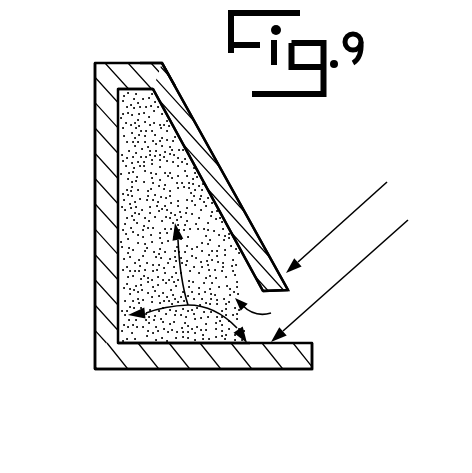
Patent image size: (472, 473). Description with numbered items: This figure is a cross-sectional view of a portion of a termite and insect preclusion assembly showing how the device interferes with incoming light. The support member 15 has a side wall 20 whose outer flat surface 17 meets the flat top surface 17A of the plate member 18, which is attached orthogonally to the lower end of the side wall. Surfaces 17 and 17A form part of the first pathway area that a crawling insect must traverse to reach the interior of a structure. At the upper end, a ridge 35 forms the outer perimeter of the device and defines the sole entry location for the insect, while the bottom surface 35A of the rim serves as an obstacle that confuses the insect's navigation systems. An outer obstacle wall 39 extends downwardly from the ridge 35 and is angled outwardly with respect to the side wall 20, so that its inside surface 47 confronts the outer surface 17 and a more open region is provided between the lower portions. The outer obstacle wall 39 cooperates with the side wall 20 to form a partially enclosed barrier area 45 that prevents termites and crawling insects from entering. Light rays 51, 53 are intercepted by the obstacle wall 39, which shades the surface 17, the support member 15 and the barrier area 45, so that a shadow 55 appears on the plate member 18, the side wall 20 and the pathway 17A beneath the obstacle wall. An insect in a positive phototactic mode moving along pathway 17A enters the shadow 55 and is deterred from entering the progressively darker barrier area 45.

The support member 15 is at (92, 165).
The outer flat surface 17 is at (118, 279).
The top surface 17A is at (162, 318).
The plate member 18 is at (232, 357).
The side wall 20 is at (95, 227).
The ridge 35 is at (162, 63).
The bottom surface of the rim 35A is at (143, 92).
The outer obstacle wall 39 is at (203, 131).
The barrier area 45 is at (268, 310).
The inside surface 47 is at (242, 253).
The light ray 51 is at (363, 204).
The light ray 53 is at (378, 246).
The shadow 55 is at (187, 283).